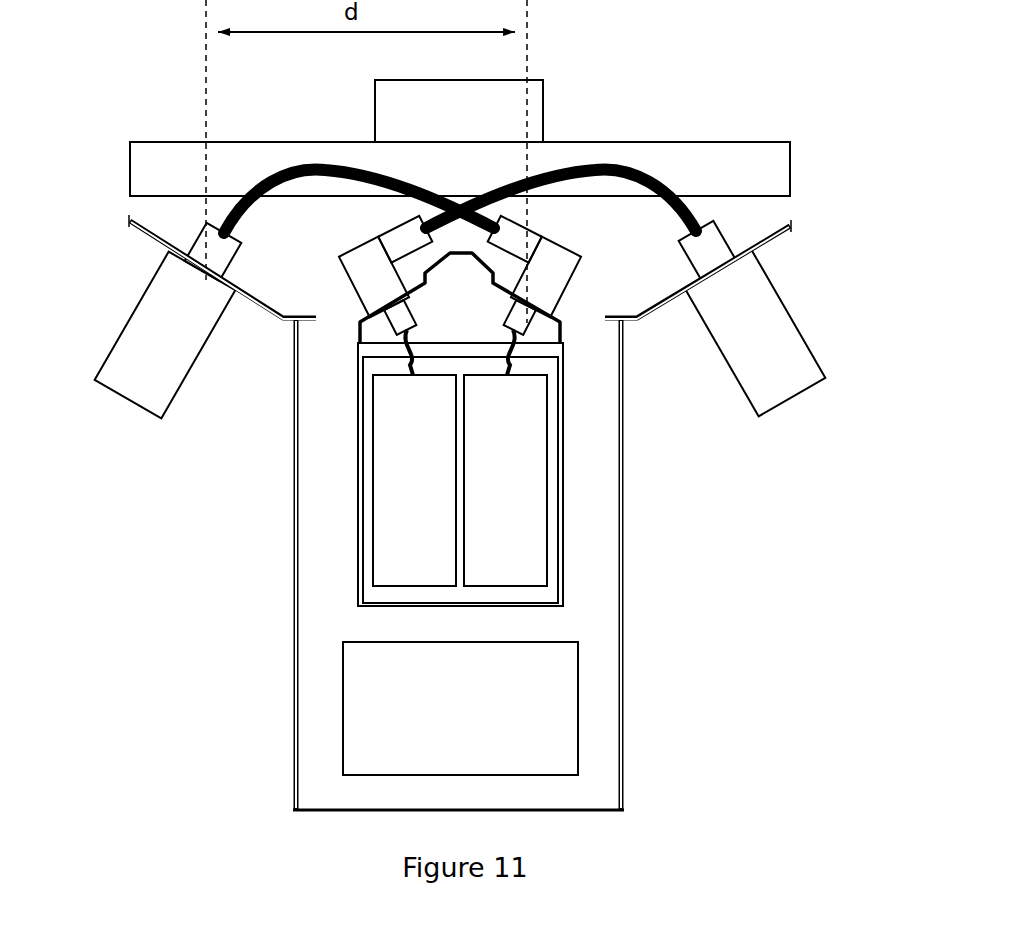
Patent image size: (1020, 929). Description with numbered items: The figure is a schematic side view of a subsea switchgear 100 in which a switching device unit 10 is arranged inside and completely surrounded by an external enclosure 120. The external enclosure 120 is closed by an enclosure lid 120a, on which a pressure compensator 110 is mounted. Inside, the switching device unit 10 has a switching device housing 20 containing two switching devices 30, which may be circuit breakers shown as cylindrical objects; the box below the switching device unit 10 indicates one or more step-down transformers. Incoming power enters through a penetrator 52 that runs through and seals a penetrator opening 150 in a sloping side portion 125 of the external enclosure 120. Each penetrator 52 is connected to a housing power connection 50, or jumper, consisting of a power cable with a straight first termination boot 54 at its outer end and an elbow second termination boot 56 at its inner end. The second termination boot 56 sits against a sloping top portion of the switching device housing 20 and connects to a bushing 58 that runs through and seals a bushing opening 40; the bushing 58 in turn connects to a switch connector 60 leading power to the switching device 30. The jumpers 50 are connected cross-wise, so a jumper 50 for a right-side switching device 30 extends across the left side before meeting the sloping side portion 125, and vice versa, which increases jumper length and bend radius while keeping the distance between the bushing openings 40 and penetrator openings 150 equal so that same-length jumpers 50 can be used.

The switching device unit 10 is at (604, 480).
The switching device housing 20 is at (562, 505).
The switching device 30 is at (427, 489).
The bushing opening 40 is at (356, 317).
The housing power connection 50 is at (326, 158).
The penetrator 52 is at (765, 344).
The first termination boot 54 is at (683, 252).
The second termination boot 56 is at (388, 292).
The bushing 58 is at (388, 322).
The switch connector 60 is at (507, 363).
The subsea switchgear 100 is at (814, 56).
The pressure compensator 110 is at (478, 124).
The external enclosure 120 is at (298, 478).
The enclosure lid 120a is at (755, 182).
The sloping side portion 125 is at (797, 290).
The penetrator opening 150 is at (146, 263).